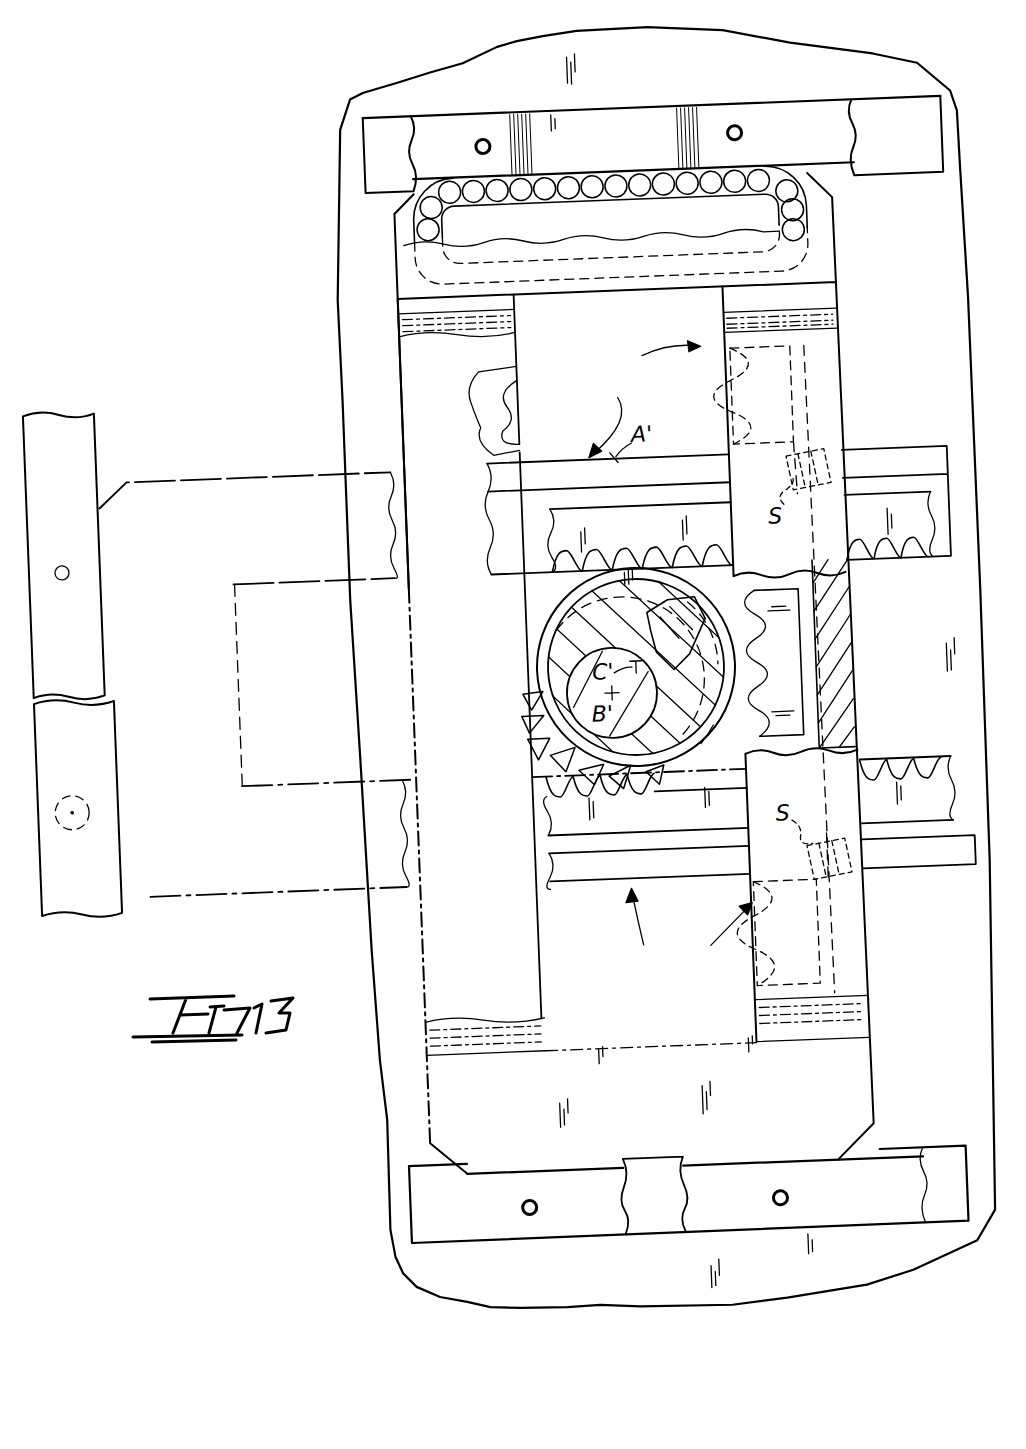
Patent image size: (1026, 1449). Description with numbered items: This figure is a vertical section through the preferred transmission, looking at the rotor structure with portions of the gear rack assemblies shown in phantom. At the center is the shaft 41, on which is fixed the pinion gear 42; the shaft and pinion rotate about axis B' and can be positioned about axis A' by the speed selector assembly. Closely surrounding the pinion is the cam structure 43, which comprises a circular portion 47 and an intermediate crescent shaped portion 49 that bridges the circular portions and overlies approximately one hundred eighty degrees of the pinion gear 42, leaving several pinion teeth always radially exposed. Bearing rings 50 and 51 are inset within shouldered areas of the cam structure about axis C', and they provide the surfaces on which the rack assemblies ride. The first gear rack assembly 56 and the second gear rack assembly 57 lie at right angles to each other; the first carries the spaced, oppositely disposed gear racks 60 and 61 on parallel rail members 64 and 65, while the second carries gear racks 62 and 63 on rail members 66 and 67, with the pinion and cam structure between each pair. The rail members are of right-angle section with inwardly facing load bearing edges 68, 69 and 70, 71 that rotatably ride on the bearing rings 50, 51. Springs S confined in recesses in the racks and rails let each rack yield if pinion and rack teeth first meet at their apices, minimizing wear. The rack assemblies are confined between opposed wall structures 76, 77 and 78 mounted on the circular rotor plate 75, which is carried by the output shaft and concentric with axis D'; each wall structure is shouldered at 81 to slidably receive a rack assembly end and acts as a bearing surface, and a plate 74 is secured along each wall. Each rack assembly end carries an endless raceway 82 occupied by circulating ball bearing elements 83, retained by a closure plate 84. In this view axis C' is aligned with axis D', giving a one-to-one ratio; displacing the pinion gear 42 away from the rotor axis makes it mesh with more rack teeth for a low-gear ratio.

The shaft 41 is at (646, 710).
The pinion gear 42 is at (652, 640).
The cam structure 43 is at (700, 744).
The circular portion 47 is at (556, 636).
The crescent shaped portion 49 is at (694, 604).
The bearing ring 50 is at (548, 608).
The bearing ring 51 is at (577, 600).
The first gear rack assembly 56 is at (620, 673).
The second gear rack assembly 57 is at (682, 655).
The gear rack 60 is at (684, 533).
The gear rack 61 is at (690, 821).
The gear rack 62 is at (528, 402).
The gear rack 63 is at (790, 674).
The rail member 64 is at (310, 462).
The rail member 65 is at (352, 882).
The rail member 66 is at (408, 380).
The rail member 67 is at (851, 398).
The load bearing edge 68 is at (884, 570).
The load bearing edge 69 is at (892, 768).
The load bearing edge 70 is at (540, 446).
The load bearing edge 71 is at (742, 384).
The plate 74 is at (404, 134).
The circular rotor plate 75 is at (632, 36).
The wall structure 76 is at (636, 113).
The wall structure 77 is at (730, 1226).
The wall structure 78 is at (112, 432).
The shouldered portion 81 is at (622, 178).
The endless raceway 82 is at (556, 178).
The bearing elements 83 is at (700, 198).
The closure plate 84 is at (856, 274).